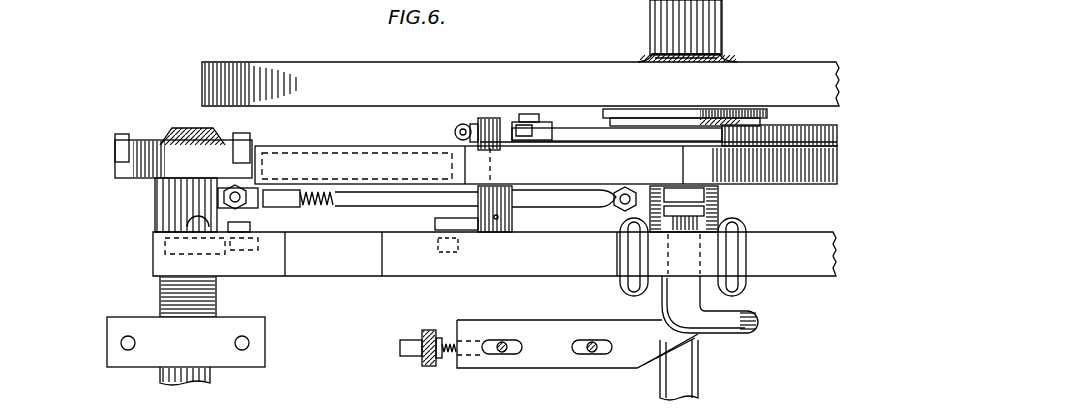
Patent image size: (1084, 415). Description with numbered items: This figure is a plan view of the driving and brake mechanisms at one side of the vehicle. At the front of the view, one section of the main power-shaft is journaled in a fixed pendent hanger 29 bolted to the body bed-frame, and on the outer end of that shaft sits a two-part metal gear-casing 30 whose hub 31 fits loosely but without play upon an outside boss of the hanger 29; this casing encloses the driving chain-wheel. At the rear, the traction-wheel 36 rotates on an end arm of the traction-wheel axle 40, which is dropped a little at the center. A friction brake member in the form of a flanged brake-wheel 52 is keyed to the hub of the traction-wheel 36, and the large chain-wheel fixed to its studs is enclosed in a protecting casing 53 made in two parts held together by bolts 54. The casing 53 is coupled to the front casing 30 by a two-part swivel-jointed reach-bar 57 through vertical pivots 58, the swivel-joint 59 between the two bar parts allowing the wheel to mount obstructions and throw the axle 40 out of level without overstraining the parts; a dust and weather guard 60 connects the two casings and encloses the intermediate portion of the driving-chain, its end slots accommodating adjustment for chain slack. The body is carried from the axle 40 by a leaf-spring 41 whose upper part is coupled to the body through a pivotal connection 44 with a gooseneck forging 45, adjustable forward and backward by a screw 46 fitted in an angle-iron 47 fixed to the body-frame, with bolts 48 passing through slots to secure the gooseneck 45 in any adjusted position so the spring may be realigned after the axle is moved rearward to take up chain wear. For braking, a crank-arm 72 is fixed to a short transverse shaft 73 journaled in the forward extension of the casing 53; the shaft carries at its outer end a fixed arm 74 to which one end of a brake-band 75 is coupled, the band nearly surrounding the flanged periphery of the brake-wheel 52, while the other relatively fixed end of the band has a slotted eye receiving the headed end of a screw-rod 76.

The hanger 29 is at (186, 330).
The gear-casing 30 is at (168, 152).
The hub 31 is at (152, 203).
The traction-wheel 36 is at (607, 76).
The traction-wheel axle 40 is at (684, 378).
The leaf-spring 41 is at (494, 254).
The pivotal connection 44 is at (683, 257).
The gooseneck forging 45 is at (540, 360).
The screw 46 is at (450, 356).
The angle-iron 47 is at (428, 330).
The bolts 48 is at (584, 346).
The brake-wheel 52 is at (781, 128).
The casing 53 is at (812, 206).
The bolts 54 is at (690, 196).
The reach-bar 57 is at (420, 196).
The vertical pivots 58 is at (233, 188).
The swivel-joint 59 is at (298, 207).
The dust and weather guard 60 is at (376, 165).
The crank-arm 72 is at (470, 226).
The transverse shaft 73 is at (490, 165).
The fixed arm 74 is at (492, 128).
The brake-band 75 is at (660, 136).
The screw-rod 76 is at (457, 132).